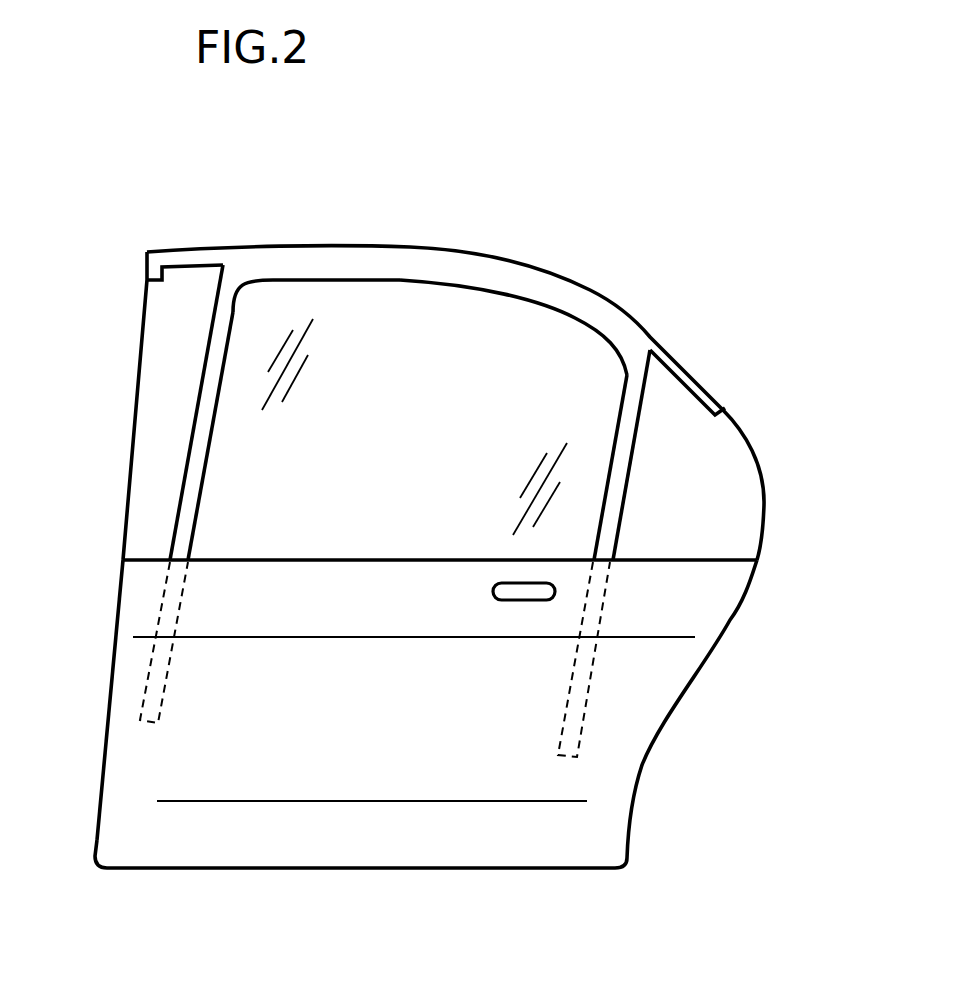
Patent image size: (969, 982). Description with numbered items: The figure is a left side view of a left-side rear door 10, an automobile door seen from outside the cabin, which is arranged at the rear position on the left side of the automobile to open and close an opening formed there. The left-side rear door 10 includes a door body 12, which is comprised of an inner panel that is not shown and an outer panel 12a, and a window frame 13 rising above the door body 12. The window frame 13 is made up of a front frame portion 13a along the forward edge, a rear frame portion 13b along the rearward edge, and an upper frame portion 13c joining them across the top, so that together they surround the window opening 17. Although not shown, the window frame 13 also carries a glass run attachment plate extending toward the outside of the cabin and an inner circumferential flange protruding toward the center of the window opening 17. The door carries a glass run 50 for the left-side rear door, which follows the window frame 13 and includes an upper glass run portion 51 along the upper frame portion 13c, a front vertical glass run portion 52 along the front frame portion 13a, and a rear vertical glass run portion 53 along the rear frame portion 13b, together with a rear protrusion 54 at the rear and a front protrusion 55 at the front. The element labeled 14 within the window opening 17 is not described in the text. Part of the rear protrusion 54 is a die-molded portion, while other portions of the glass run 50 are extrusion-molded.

The left-side rear door 10 is at (414, 200).
The door body 12 is at (644, 765).
The outer panel 12a is at (498, 848).
The window frame 13 is at (240, 246).
The front frame portion 13a is at (153, 442).
The rear frame portion 13b is at (737, 512).
The upper frame portion 13c is at (515, 285).
The window glass 14 is at (520, 345).
The window opening 17 is at (340, 286).
The glass run 50 is at (468, 268).
The upper glass run portion 51 is at (422, 263).
The front vertical glass run portion 52 is at (185, 512).
The rear vertical glass run portion 53 is at (613, 523).
The rear protrusion 54 is at (695, 378).
The front protrusion 55 is at (185, 257).